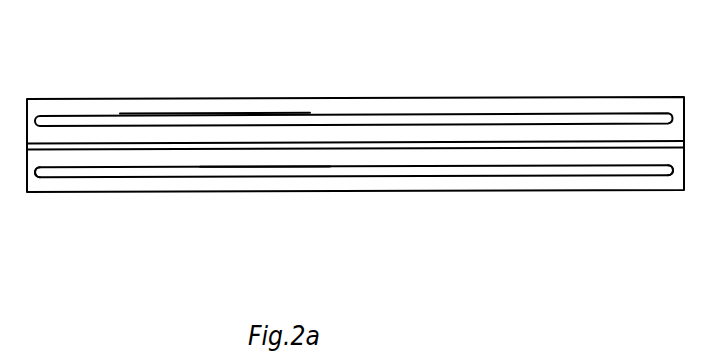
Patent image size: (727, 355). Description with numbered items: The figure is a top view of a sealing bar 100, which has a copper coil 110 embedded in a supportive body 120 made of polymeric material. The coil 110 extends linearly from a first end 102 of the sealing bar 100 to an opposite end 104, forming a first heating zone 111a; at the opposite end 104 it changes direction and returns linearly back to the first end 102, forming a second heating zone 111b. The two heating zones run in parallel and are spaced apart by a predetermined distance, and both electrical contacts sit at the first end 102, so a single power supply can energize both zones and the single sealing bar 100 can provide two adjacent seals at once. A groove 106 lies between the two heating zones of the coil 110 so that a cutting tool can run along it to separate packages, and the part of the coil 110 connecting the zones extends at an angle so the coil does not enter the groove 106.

The sealing bar 100 is at (395, 62).
The first end 102 is at (71, 237).
The opposite end 104 is at (633, 216).
The groove 106 is at (355, 216).
The coil 110 is at (354, 146).
The first heating zone 111a is at (256, 218).
The second heating zone 111b is at (254, 71).
The supportive body 120 is at (353, 71).